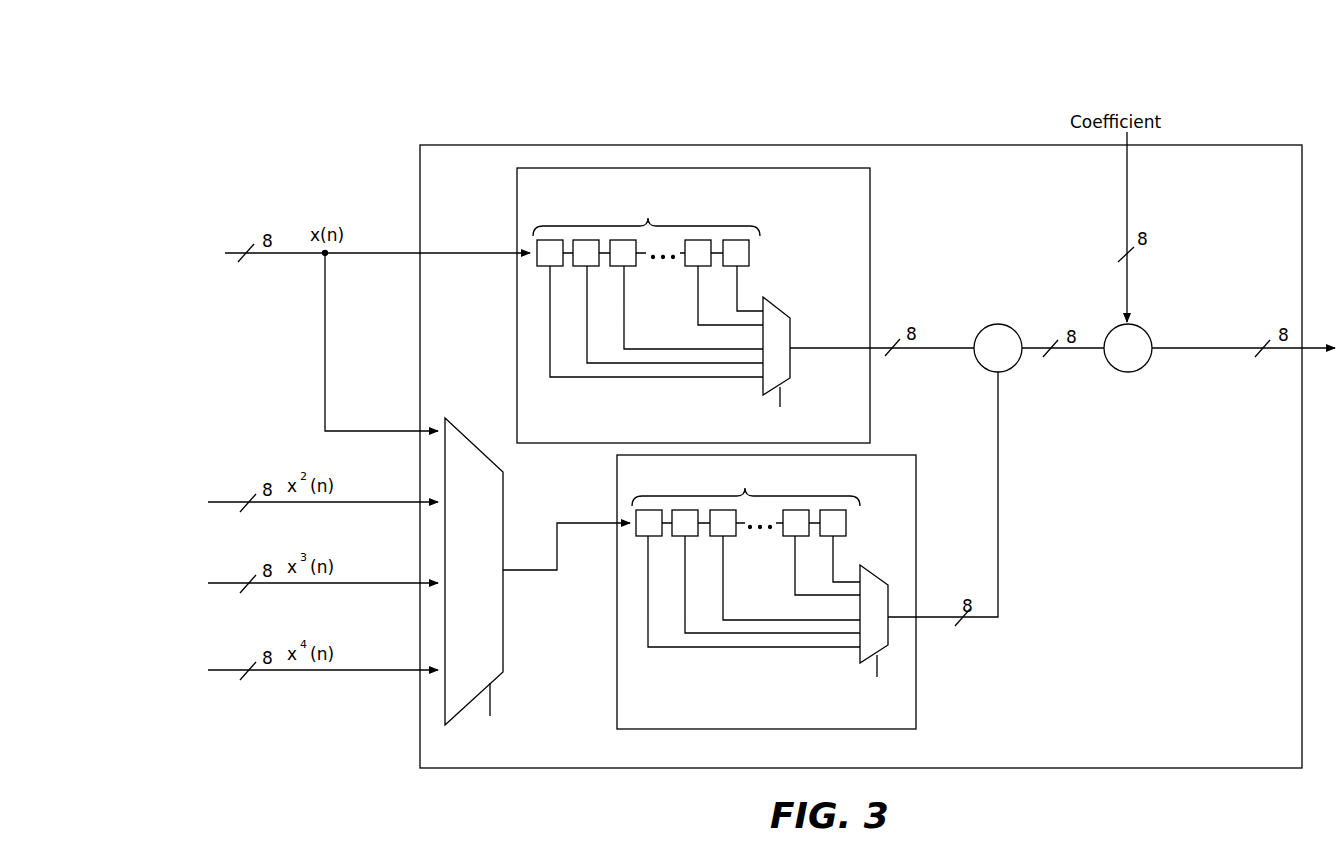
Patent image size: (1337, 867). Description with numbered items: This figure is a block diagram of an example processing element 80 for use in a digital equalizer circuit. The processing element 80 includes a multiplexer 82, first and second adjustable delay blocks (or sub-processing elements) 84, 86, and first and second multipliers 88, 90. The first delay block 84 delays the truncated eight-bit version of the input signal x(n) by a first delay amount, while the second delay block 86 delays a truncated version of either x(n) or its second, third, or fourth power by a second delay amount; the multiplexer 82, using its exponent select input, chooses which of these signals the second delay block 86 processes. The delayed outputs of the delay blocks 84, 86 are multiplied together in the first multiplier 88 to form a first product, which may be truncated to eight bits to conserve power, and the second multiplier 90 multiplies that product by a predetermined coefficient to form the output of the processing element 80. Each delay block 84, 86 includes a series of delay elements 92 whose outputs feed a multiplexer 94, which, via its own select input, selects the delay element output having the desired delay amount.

The processing element 80 is at (492, 145).
The multiplexer 82 is at (490, 581).
The first adjustable delay block 84 is at (871, 212).
The second adjustable delay block 86 is at (882, 455).
The first multiplier 88 is at (1012, 370).
The second multiplier 90 is at (1148, 322).
The delay elements 92 is at (749, 253).
The multiplexer 94 is at (795, 318).